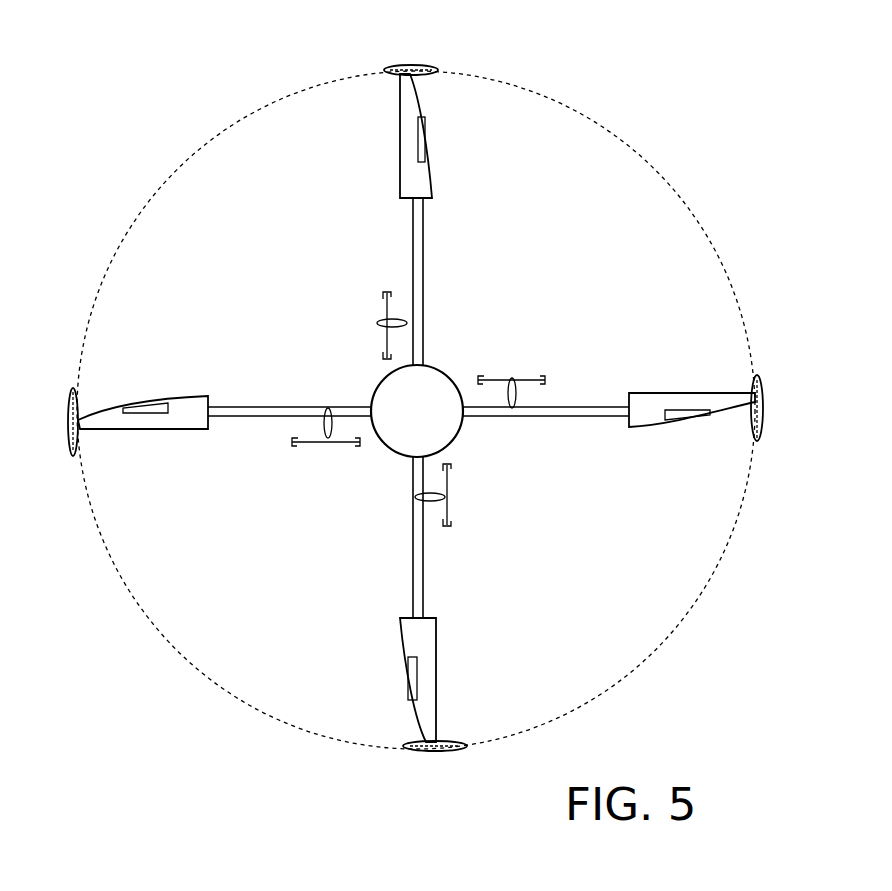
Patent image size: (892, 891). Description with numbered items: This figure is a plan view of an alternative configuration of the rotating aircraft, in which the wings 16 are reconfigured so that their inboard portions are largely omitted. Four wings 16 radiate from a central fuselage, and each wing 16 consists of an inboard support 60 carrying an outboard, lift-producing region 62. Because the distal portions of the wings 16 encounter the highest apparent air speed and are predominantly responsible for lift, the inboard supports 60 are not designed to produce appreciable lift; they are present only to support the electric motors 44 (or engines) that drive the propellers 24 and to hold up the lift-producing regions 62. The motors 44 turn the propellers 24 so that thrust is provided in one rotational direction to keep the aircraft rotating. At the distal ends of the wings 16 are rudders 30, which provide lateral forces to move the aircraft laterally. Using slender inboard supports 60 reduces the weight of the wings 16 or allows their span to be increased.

The fixed wings 16 is at (376, 183).
The propellers 24 is at (385, 310).
The rudders 30 is at (412, 65).
The electric motors 44 is at (402, 323).
The inboard supports 60 is at (418, 342).
The lift-producing regions 62 is at (413, 98).